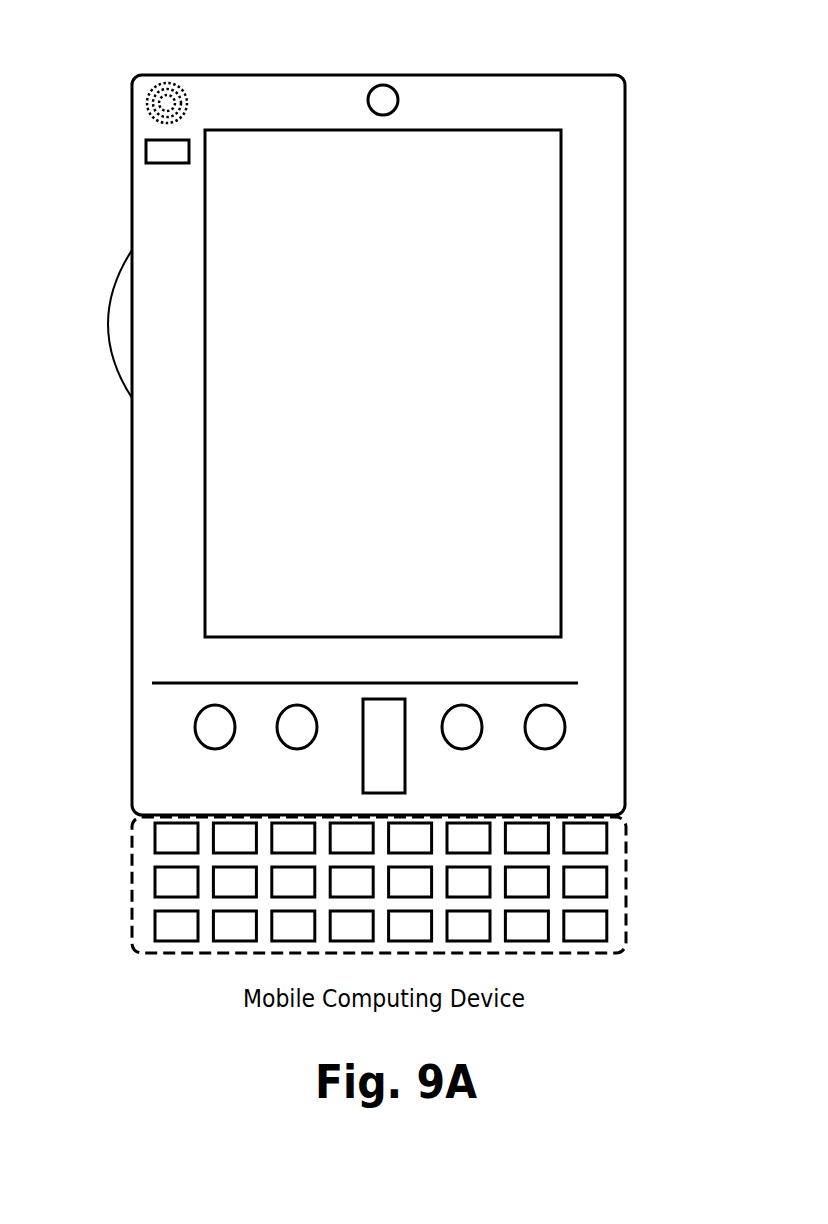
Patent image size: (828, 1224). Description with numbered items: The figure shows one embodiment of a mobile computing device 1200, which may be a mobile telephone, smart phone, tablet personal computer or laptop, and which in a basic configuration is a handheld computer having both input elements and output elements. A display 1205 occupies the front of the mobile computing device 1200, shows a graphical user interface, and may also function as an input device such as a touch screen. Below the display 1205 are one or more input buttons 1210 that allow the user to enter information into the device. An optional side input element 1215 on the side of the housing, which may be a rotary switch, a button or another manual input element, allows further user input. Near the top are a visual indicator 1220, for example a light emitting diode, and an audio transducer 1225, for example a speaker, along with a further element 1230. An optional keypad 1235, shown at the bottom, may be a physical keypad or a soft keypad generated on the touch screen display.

The mobile computing device 1200 is at (625, 103).
The display 1205 is at (233, 477).
The input buttons 1210 is at (363, 754).
The side input element 1215 is at (109, 309).
The visual indicator 1220 is at (150, 147).
The audio transducer 1225 is at (147, 95).
The camera 1230 is at (375, 85).
The keypad 1235 is at (143, 886).